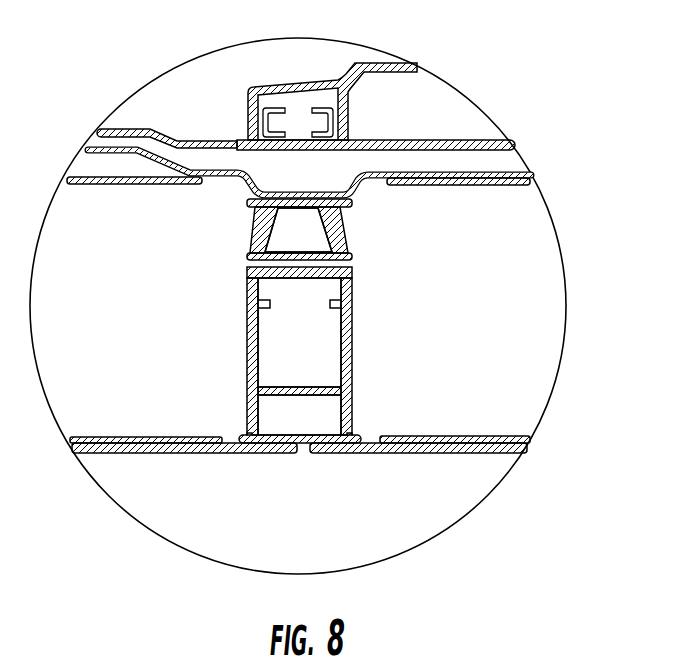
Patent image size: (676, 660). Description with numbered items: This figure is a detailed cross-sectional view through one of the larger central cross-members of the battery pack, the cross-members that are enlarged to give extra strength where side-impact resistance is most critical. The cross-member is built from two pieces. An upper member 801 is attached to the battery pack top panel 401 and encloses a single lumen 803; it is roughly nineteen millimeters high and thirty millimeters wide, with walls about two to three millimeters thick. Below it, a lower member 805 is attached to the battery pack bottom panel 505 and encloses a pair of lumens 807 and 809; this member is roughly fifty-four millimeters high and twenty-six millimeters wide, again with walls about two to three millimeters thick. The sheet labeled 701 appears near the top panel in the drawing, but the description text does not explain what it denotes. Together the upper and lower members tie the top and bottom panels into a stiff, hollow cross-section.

The upper panel sheet 701 is at (128, 129).
The battery pack top panel 401 is at (480, 171).
The upper member 801 is at (341, 232).
The single lumen 803 is at (318, 247).
The lower member 805 is at (335, 355).
The lumen 807 is at (315, 361).
The lumen 809 is at (315, 427).
The battery pack bottom panel 505 is at (370, 453).